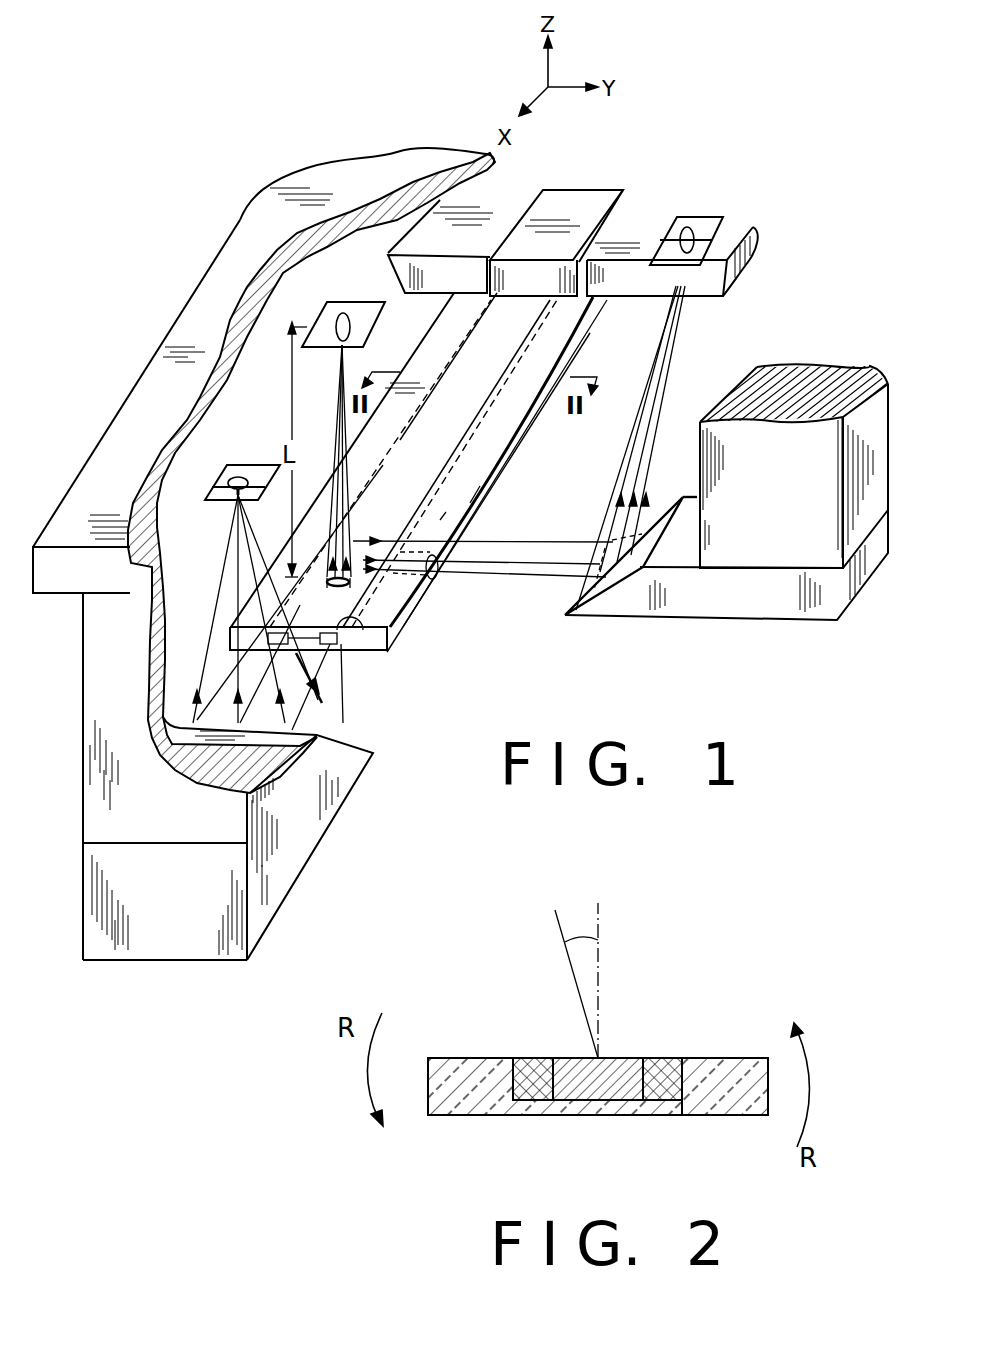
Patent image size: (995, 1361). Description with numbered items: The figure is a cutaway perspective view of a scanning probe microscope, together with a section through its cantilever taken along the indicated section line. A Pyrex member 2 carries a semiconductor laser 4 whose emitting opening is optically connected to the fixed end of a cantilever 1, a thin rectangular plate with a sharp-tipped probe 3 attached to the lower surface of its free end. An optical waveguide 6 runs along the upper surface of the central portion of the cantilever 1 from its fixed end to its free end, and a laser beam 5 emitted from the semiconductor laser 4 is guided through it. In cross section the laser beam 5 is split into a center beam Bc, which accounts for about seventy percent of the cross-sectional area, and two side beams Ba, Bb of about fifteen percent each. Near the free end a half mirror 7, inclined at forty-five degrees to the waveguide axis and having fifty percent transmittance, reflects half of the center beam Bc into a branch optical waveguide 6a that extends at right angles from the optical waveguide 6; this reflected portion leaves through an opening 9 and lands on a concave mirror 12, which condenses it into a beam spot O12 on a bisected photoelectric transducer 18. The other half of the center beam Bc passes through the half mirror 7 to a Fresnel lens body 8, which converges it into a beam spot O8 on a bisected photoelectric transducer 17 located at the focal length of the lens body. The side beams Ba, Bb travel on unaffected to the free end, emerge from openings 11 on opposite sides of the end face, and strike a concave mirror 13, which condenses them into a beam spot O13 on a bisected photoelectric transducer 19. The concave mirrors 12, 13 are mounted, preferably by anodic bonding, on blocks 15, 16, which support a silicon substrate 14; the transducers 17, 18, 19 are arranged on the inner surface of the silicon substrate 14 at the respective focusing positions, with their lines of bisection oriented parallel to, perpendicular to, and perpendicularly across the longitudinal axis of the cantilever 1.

In FIG. 1, the cantilever 1 is at (427, 580).
In FIG. 2, the cantilever 1 is at (440, 1058).
In FIG. 1, the Pyrex member 2 is at (700, 290).
In FIG. 1, the probe 3 is at (327, 677).
In FIG. 1, the semiconductor laser 4 is at (562, 200).
In FIG. 1, the laser beam 5 is at (548, 344).
In FIG. 2, the laser beam 5 is at (629, 980).
In FIG. 1, the optical waveguide 6 is at (440, 452).
In FIG. 2, the optical waveguide 6 is at (582, 1057).
In FIG. 1, the optical waveguide 6a is at (330, 577).
In FIG. 1, the half mirror 7 is at (397, 500).
In FIG. 1, the Fresnel lens body 8 is at (348, 586).
In FIG. 1, the opening 9 is at (432, 563).
In FIG. 1, the openings 11 is at (289, 597).
In FIG. 1, the concave mirror 12 is at (625, 573).
In FIG. 1, the concave mirror 13 is at (358, 736).
In FIG. 1, the silicon substrate 14 is at (338, 178).
In FIG. 1, the block 15 is at (789, 365).
In FIG. 1, the block 16 is at (97, 665).
In FIG. 1, the bisected photoelectric transducer 17 is at (307, 303).
In FIG. 1, the bisected photoelectric transducer 18 is at (713, 218).
In FIG. 1, the bisected photoelectric transducer 19 is at (208, 472).
In FIG. 1, the beam spot O8 is at (343, 312).
In FIG. 1, the beam spot O12 is at (690, 230).
In FIG. 1, the beam spot O13 is at (222, 504).
In FIG. 2, the side beam Ba is at (530, 1058).
In FIG. 2, the side beam Bb is at (677, 1058).
In FIG. 2, the center beam Bc is at (627, 1058).